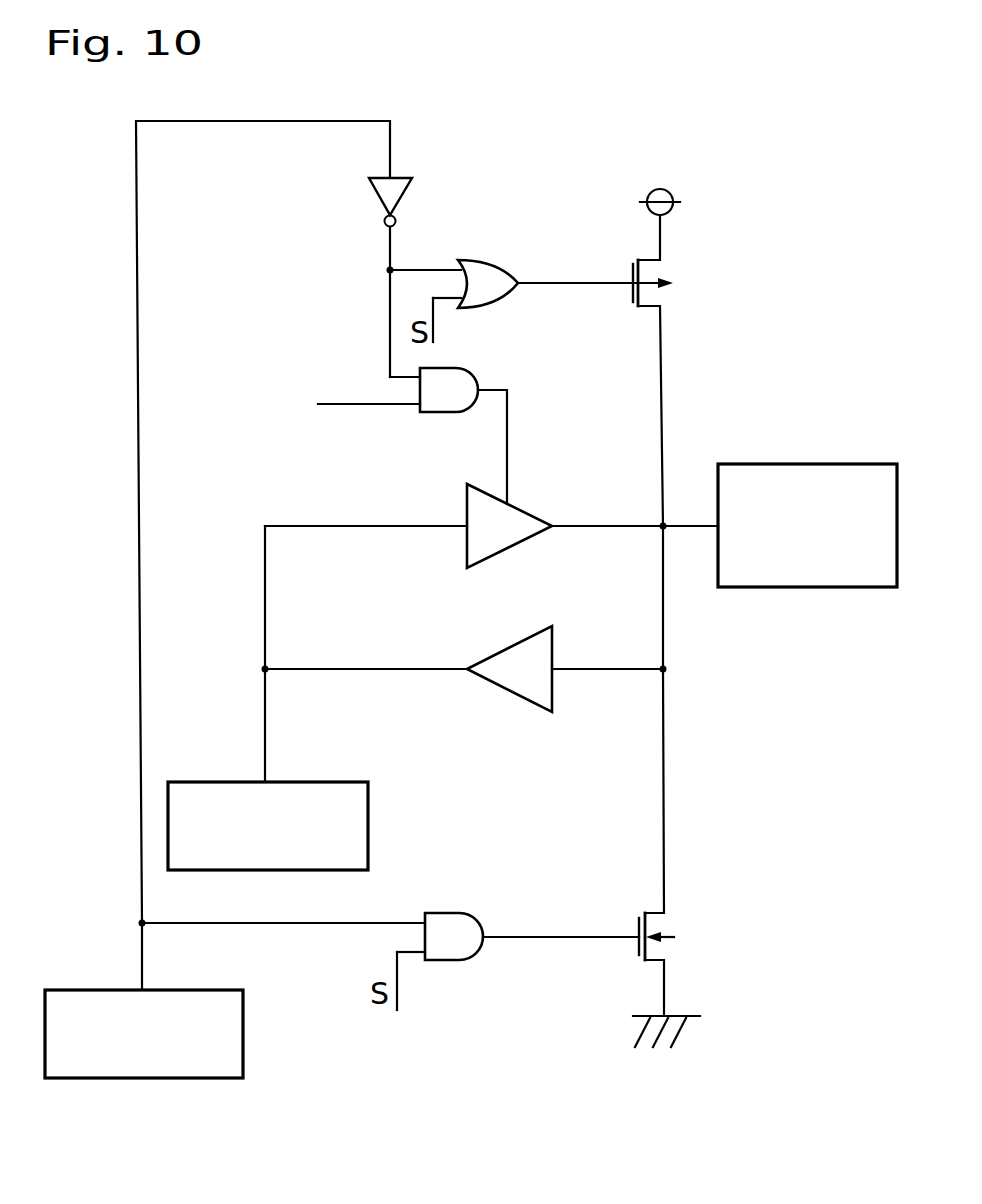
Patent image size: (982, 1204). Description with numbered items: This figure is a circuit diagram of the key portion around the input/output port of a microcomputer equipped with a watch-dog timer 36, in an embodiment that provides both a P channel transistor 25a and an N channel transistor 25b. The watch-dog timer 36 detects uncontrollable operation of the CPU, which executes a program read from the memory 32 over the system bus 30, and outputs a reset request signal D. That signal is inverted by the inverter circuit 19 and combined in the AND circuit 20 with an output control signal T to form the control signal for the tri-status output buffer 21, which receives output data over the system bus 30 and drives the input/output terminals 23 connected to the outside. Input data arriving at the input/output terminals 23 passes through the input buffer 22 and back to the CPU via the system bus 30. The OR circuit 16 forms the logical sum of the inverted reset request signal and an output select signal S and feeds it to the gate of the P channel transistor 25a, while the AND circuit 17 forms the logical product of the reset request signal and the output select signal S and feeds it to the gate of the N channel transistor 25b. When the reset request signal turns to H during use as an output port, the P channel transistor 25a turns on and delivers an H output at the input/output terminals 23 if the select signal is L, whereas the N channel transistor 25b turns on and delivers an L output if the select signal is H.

The OR circuit 16 is at (483, 310).
The AND circuit 17 is at (452, 962).
The inverter circuit 19 is at (379, 199).
The AND circuit 20 is at (447, 413).
The tri-status output buffer 21 is at (530, 507).
The input buffer 22 is at (489, 680).
The input/output terminals 23 is at (852, 462).
The P channel transistor 25a is at (633, 270).
The N channel transistor 25b is at (638, 921).
The system bus 30 is at (265, 725).
The memory 32 is at (336, 782).
The watch-dog timer 36 is at (243, 1018).